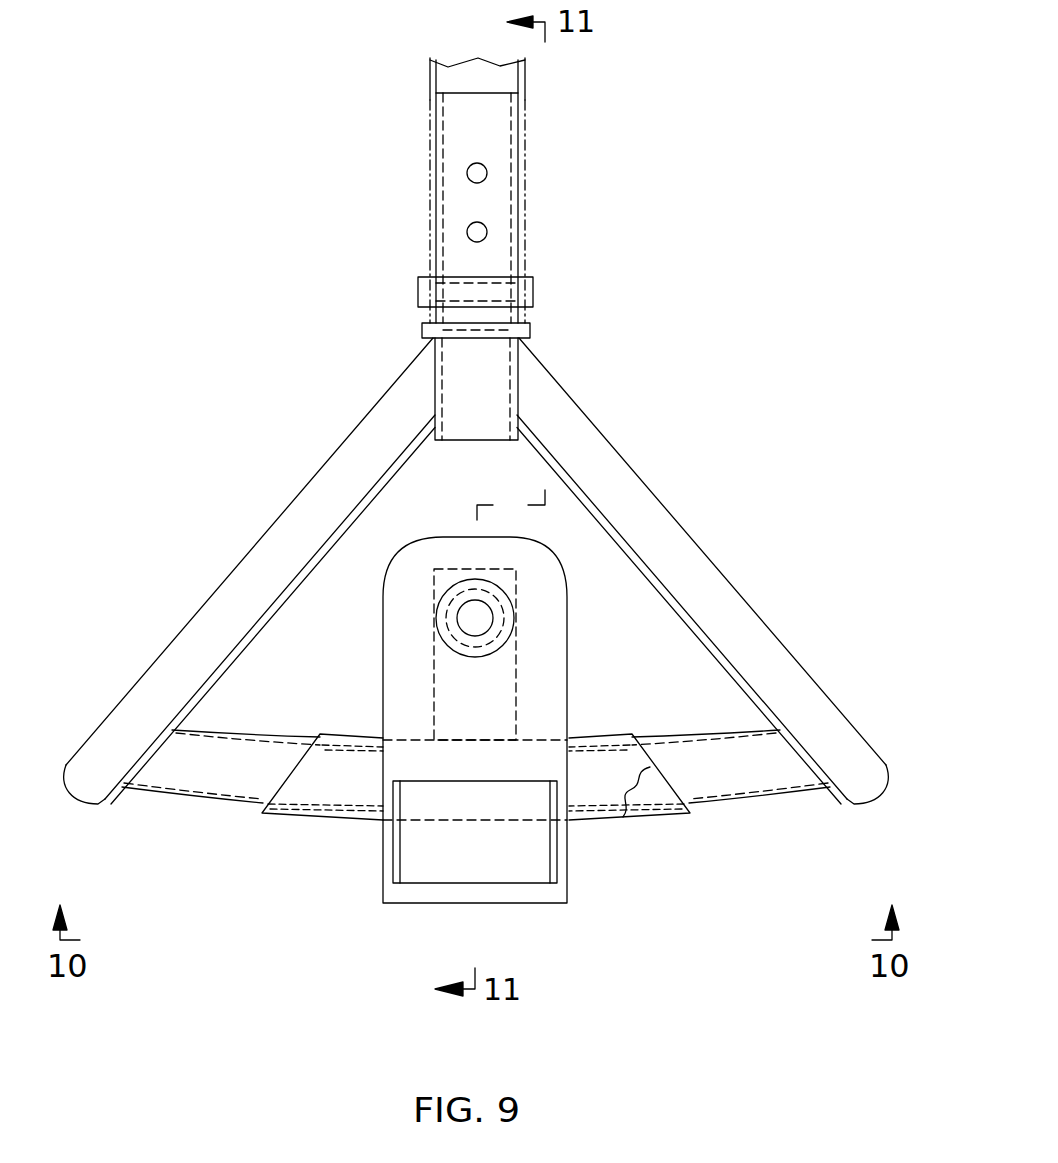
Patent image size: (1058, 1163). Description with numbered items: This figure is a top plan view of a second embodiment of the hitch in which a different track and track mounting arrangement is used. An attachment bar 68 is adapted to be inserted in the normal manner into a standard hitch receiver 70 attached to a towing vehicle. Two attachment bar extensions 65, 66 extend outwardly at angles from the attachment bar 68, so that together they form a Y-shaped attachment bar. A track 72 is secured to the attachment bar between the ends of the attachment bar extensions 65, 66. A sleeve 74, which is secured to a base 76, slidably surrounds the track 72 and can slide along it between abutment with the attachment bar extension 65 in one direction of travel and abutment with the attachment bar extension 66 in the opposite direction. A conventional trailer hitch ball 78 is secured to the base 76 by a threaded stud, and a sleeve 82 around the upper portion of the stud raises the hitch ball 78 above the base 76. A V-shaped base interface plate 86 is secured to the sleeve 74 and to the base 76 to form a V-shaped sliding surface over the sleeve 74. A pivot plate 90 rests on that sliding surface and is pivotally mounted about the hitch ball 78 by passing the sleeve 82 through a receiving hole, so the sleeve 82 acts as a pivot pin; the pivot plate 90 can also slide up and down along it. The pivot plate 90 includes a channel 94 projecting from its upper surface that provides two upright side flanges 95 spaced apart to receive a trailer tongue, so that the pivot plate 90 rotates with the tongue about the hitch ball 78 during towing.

The attachment bar extension 65 is at (250, 548).
The attachment bar extension 66 is at (657, 520).
The attachment bar 68 is at (447, 383).
The hitch receiver 70 is at (525, 193).
The track 72 is at (195, 788).
The sleeve 74 is at (667, 812).
The base 76 is at (434, 698).
The trailer hitch ball 78 is at (438, 617).
The sleeve 82 is at (480, 645).
The V-shaped base interface plate 86 is at (310, 815).
The pivot plate 90 is at (543, 663).
The channel 94 is at (453, 872).
The side flanges 95 is at (395, 863).